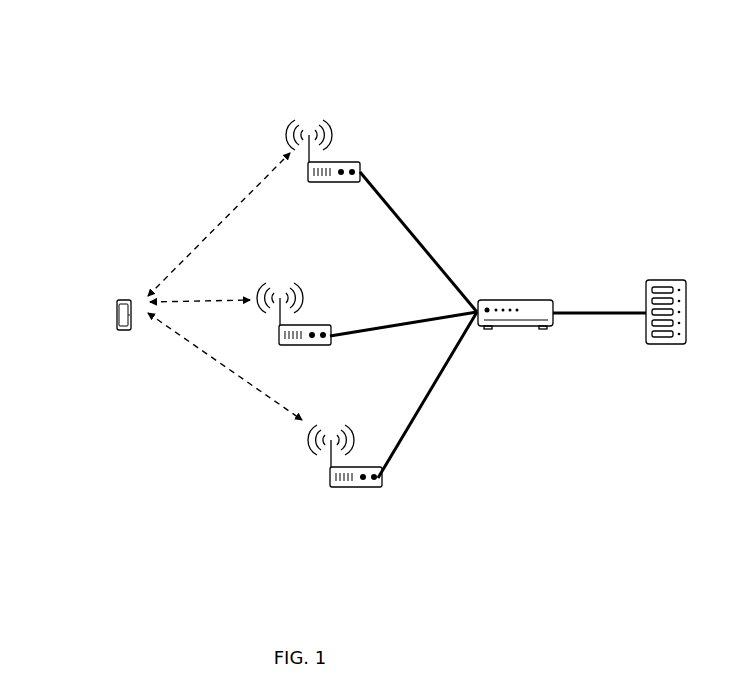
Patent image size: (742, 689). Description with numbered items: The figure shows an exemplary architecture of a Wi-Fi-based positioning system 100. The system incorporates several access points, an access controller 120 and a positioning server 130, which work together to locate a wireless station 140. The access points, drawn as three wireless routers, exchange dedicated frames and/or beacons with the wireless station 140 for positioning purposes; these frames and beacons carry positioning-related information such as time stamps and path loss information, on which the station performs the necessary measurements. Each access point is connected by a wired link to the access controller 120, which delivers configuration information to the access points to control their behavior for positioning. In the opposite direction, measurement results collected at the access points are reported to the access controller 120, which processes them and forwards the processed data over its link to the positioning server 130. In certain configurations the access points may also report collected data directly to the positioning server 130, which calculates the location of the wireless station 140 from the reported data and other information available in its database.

The Wi-Fi-based positioning system 100 is at (585, 78).
The access controller 120 is at (500, 286).
The positioning server 130 is at (652, 273).
The wireless station 140 is at (97, 322).